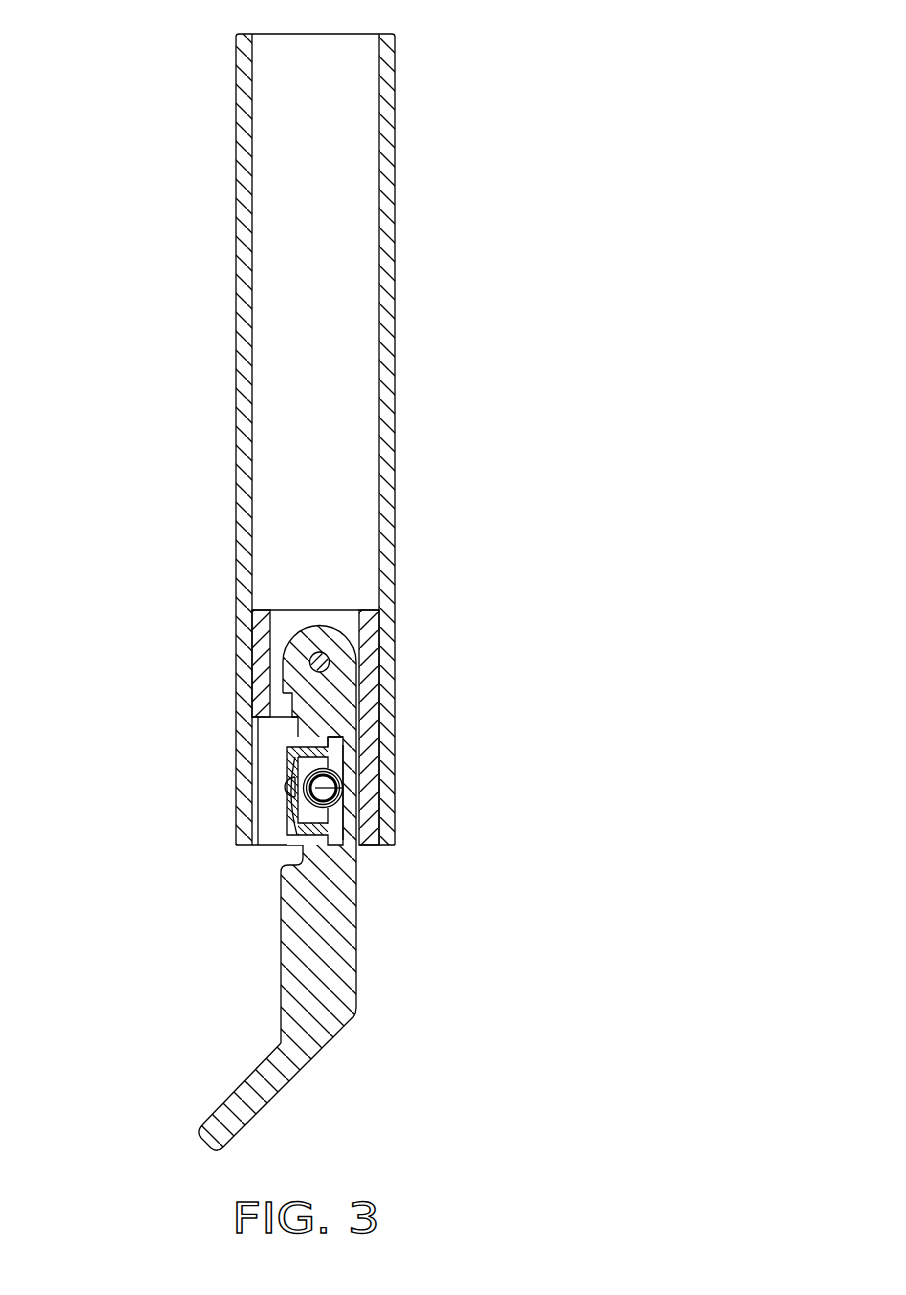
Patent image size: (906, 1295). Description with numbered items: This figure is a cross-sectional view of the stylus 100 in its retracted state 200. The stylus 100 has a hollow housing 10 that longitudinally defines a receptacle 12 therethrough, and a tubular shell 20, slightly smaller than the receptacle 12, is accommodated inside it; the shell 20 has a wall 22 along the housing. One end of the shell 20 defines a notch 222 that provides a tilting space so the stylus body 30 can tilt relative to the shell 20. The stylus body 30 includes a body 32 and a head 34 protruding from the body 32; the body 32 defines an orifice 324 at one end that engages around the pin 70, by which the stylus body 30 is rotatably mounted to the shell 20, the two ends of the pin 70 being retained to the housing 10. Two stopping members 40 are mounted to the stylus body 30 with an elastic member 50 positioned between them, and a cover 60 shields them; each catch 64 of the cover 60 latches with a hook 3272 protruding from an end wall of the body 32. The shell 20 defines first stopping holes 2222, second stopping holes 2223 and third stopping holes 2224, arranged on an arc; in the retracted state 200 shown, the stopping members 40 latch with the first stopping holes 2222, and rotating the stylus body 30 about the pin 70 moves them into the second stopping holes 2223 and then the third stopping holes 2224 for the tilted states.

The stylus 100 is at (158, 67).
The retracted state 200 is at (600, 32).
The housing 10 is at (388, 70).
The receptacle 12 is at (283, 202).
The shell 20 is at (260, 692).
The side wall 22 is at (368, 622).
The notch 222 is at (273, 732).
The first stopping hole 2222 is at (293, 812).
The second stopping hole 2223 is at (297, 768).
The third stopping hole 2224 is at (287, 787).
The stylus body 30 is at (484, 917).
The body 32 is at (337, 935).
The orifice 324 is at (313, 653).
The hook 3272 is at (328, 737).
The head 34 is at (270, 1078).
The stopping member 40 is at (338, 788).
The elastic member 50 is at (335, 805).
The cover 60 is at (307, 832).
The catch 64 is at (345, 772).
The pin 70 is at (310, 661).